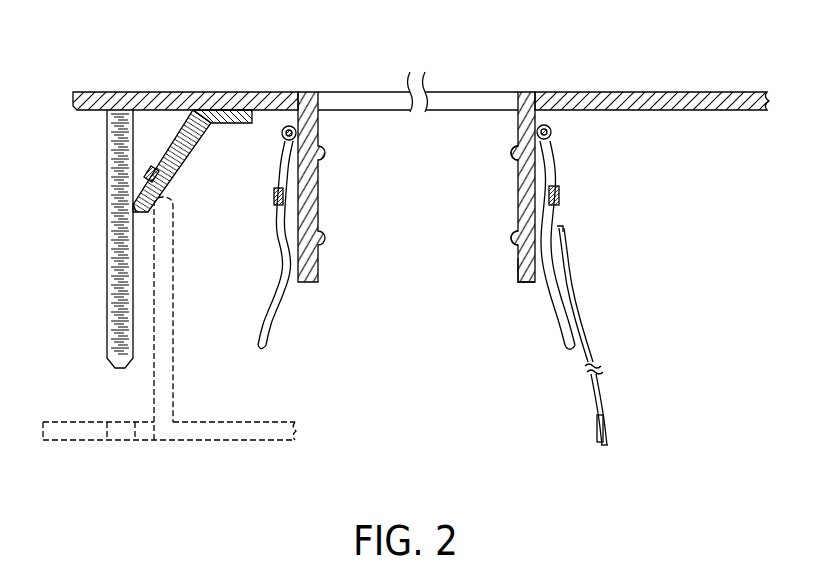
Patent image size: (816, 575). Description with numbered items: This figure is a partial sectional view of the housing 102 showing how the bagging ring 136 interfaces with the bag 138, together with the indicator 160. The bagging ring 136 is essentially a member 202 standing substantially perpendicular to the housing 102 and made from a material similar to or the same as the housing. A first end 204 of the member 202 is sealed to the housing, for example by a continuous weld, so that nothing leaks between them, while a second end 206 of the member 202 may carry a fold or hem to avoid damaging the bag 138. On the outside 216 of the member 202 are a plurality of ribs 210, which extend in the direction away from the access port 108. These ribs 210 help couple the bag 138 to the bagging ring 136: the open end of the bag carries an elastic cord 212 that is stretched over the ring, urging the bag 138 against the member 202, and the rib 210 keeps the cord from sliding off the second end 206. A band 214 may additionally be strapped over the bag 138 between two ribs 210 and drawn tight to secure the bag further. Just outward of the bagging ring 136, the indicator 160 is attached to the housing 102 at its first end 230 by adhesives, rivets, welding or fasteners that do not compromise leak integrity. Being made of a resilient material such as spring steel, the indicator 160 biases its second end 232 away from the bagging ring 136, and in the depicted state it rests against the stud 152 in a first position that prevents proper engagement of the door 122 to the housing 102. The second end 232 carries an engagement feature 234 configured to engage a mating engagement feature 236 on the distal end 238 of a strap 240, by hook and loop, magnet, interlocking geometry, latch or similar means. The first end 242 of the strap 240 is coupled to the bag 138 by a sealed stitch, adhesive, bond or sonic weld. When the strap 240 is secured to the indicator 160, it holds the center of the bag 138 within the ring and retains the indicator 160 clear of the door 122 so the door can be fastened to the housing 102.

The housing 102 is at (210, 92).
The access port 108 is at (372, 92).
The first end of the indicator 230 is at (260, 110).
The indicator 160 is at (184, 146).
The engagement feature 234 is at (146, 176).
The second end of the indicator 232 is at (132, 219).
The stud 152 is at (107, 303).
The door 122 is at (205, 440).
The bagging ring 136 is at (309, 283).
The bag 138 is at (262, 316).
The member 202 is at (528, 185).
The first end of the member 204 is at (520, 133).
The second end of the member 206 is at (518, 266).
The elastic cord 212 is at (552, 132).
The ribs 210 is at (548, 152).
The band 214 is at (560, 197).
The first end of the strap 242 is at (563, 230).
The outside of the member 216 is at (570, 272).
The strap 240 is at (612, 383).
The engagement feature 236 is at (597, 432).
The distal end of the strap 238 is at (608, 432).